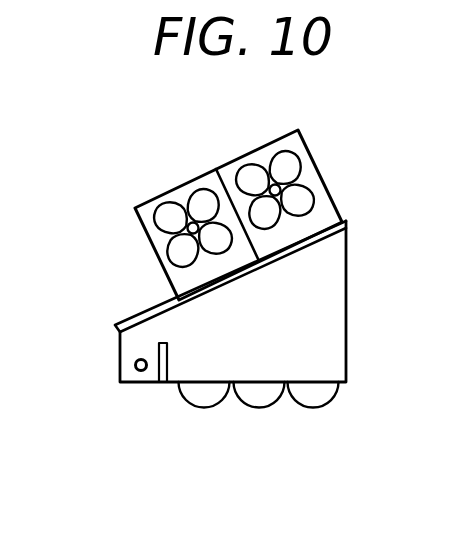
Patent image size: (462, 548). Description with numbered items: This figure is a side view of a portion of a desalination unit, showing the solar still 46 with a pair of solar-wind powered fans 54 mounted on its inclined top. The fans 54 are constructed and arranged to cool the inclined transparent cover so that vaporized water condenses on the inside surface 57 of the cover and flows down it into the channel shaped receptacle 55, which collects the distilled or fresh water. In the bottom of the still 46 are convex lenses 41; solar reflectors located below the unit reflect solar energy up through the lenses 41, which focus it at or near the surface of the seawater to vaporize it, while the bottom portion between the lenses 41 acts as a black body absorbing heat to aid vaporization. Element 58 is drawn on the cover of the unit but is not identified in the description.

The convex lenses 41 is at (195, 397).
The solar still 46 is at (293, 312).
The solar-wind powered fans 54 is at (199, 199).
The channel shaped receptacle 55 is at (132, 368).
The inside surface 57 is at (180, 302).
The fan housing frame 58 is at (289, 248).